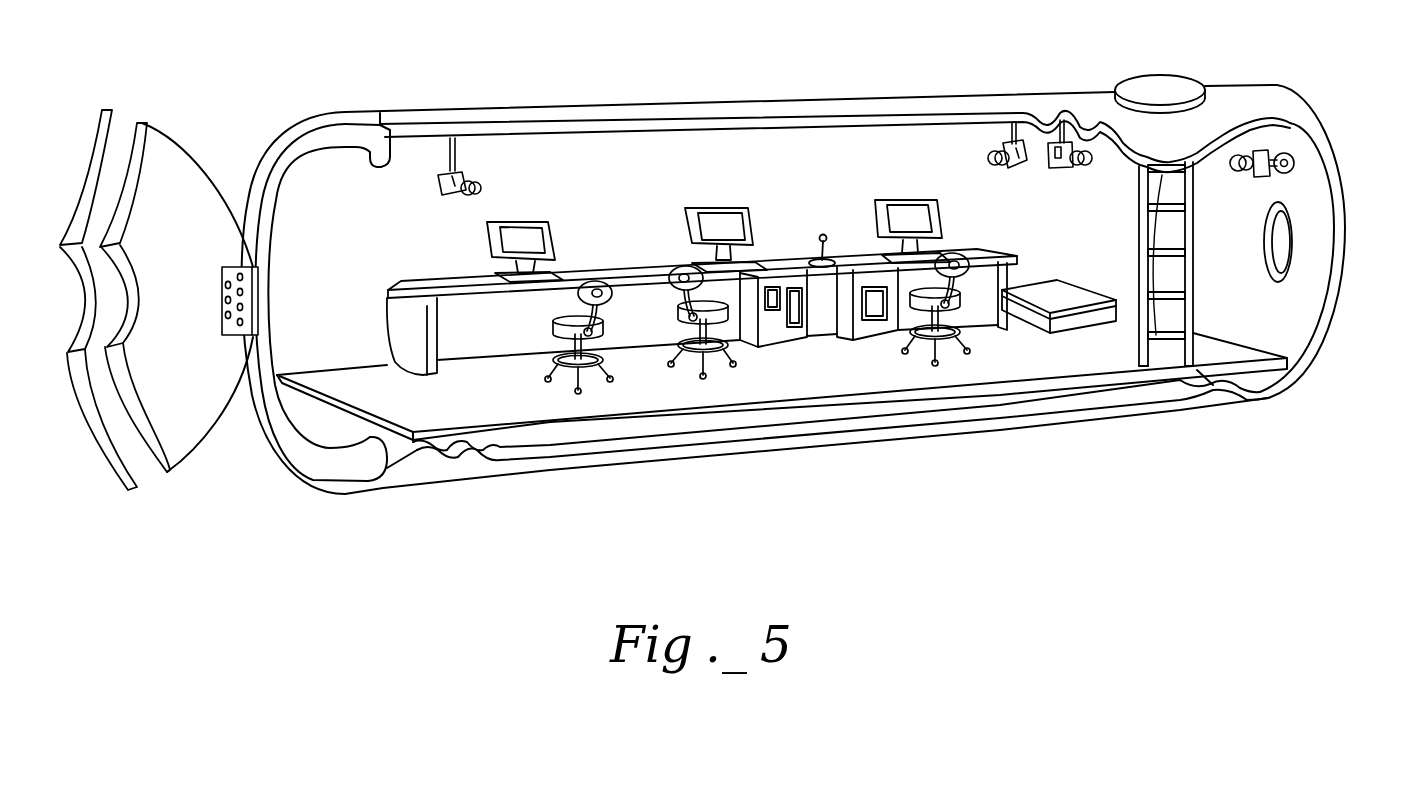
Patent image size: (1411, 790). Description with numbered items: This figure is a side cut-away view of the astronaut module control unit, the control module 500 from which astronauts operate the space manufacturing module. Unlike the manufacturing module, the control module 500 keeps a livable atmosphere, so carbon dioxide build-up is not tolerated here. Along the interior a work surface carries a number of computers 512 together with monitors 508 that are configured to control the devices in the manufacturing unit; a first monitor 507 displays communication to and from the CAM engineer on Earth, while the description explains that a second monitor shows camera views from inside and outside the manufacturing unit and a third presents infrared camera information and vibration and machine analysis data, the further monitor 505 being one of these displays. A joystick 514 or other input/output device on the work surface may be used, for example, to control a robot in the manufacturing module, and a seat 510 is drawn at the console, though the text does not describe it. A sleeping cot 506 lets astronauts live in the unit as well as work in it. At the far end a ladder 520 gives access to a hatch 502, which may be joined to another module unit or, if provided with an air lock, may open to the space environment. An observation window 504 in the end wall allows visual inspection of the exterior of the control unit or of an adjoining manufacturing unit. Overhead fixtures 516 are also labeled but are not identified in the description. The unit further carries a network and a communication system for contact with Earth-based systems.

The hyperbaric chamber 500 is at (893, 100).
The hatch 502 is at (1170, 77).
The observation window 504 is at (1290, 240).
The display monitor 505 is at (742, 208).
The sleeping cot 506 is at (1076, 300).
The first monitor 507 is at (535, 222).
The monitors 508 is at (930, 200).
The chair 510 is at (947, 310).
The computers 512 is at (777, 340).
The joystick 514 is at (824, 234).
The camera 516 is at (1028, 141).
The ladder 520 is at (1194, 317).